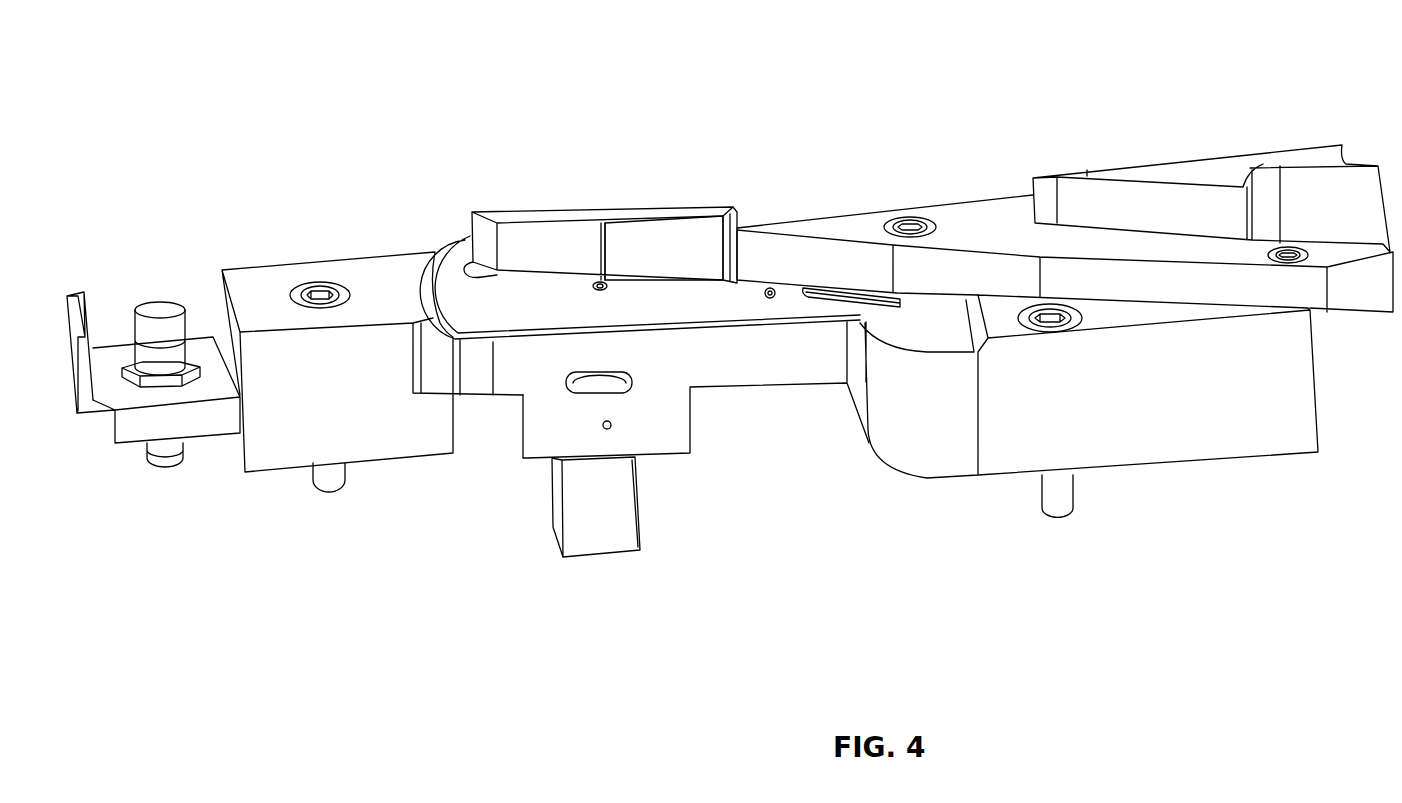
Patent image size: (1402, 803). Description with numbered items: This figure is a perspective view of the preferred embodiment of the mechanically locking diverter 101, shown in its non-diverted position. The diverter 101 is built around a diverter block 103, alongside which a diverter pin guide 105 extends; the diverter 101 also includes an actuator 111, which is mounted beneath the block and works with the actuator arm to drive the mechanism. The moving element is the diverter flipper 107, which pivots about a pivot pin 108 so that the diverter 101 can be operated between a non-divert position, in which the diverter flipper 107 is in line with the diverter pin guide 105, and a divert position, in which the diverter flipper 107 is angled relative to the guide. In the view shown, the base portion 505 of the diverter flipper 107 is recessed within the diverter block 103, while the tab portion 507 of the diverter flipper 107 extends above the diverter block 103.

The mechanically locking diverter 101 is at (145, 250).
The diverter block 103 is at (363, 462).
The diverter pin guide 105 is at (1140, 162).
The diverter flipper 107 is at (673, 259).
The pivot pin 108 is at (917, 220).
The actuator 111 is at (618, 516).
The base portion 505 is at (800, 300).
The tab portion 507 is at (577, 210).